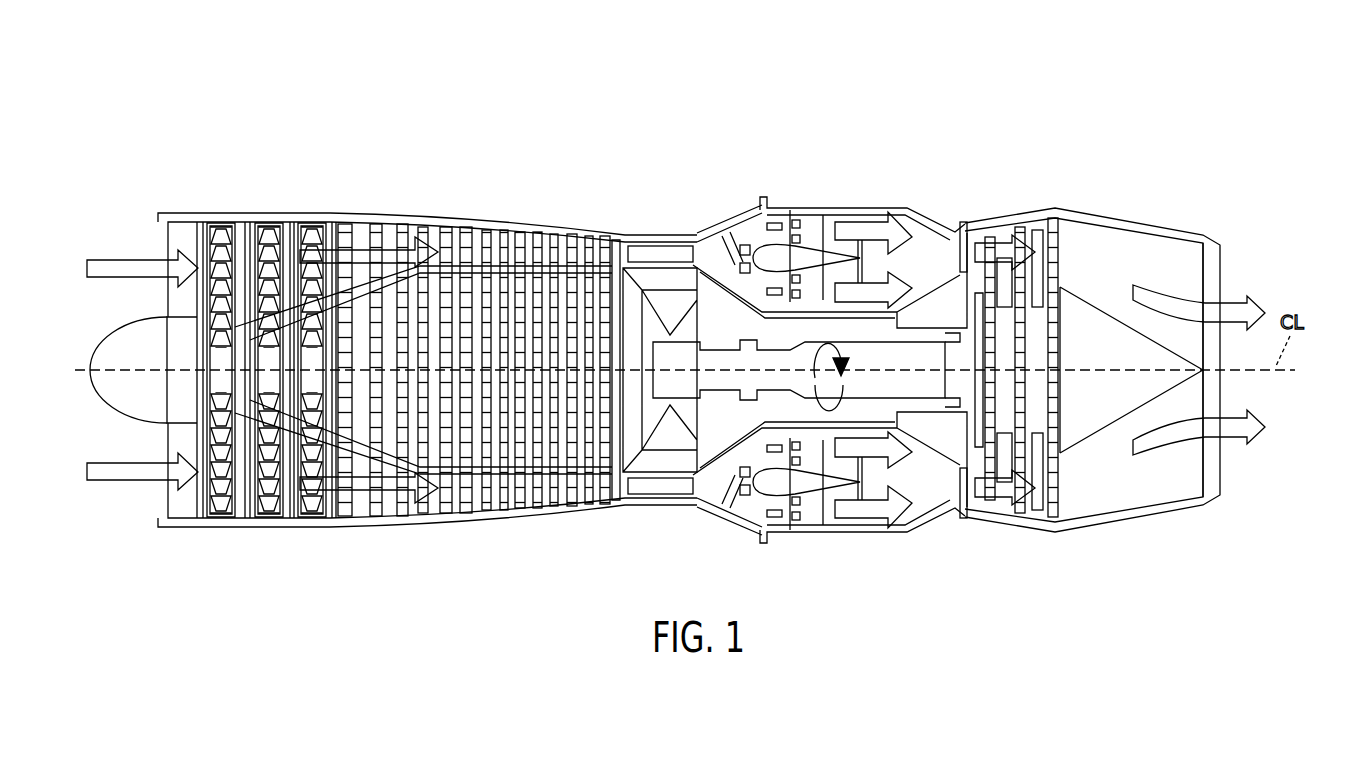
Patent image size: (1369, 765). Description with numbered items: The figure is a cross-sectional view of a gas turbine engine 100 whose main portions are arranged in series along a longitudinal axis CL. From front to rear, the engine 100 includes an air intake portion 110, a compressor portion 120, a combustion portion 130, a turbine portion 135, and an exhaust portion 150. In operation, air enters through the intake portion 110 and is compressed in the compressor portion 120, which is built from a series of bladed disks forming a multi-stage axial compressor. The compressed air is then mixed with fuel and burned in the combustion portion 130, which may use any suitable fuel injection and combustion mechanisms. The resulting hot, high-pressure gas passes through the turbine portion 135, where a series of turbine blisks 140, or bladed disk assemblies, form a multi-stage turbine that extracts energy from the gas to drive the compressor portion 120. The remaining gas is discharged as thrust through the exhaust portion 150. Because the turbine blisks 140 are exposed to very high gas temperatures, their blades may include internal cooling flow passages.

The turbine engine 100 is at (1178, 139).
The air intake portion 110 is at (168, 496).
The compressor portion 120 is at (492, 307).
The combustion portion 130 is at (700, 503).
The turbine portion 135 is at (1012, 402).
The turbine blisks 140 is at (1076, 468).
The exhaust portion 150 is at (1258, 380).